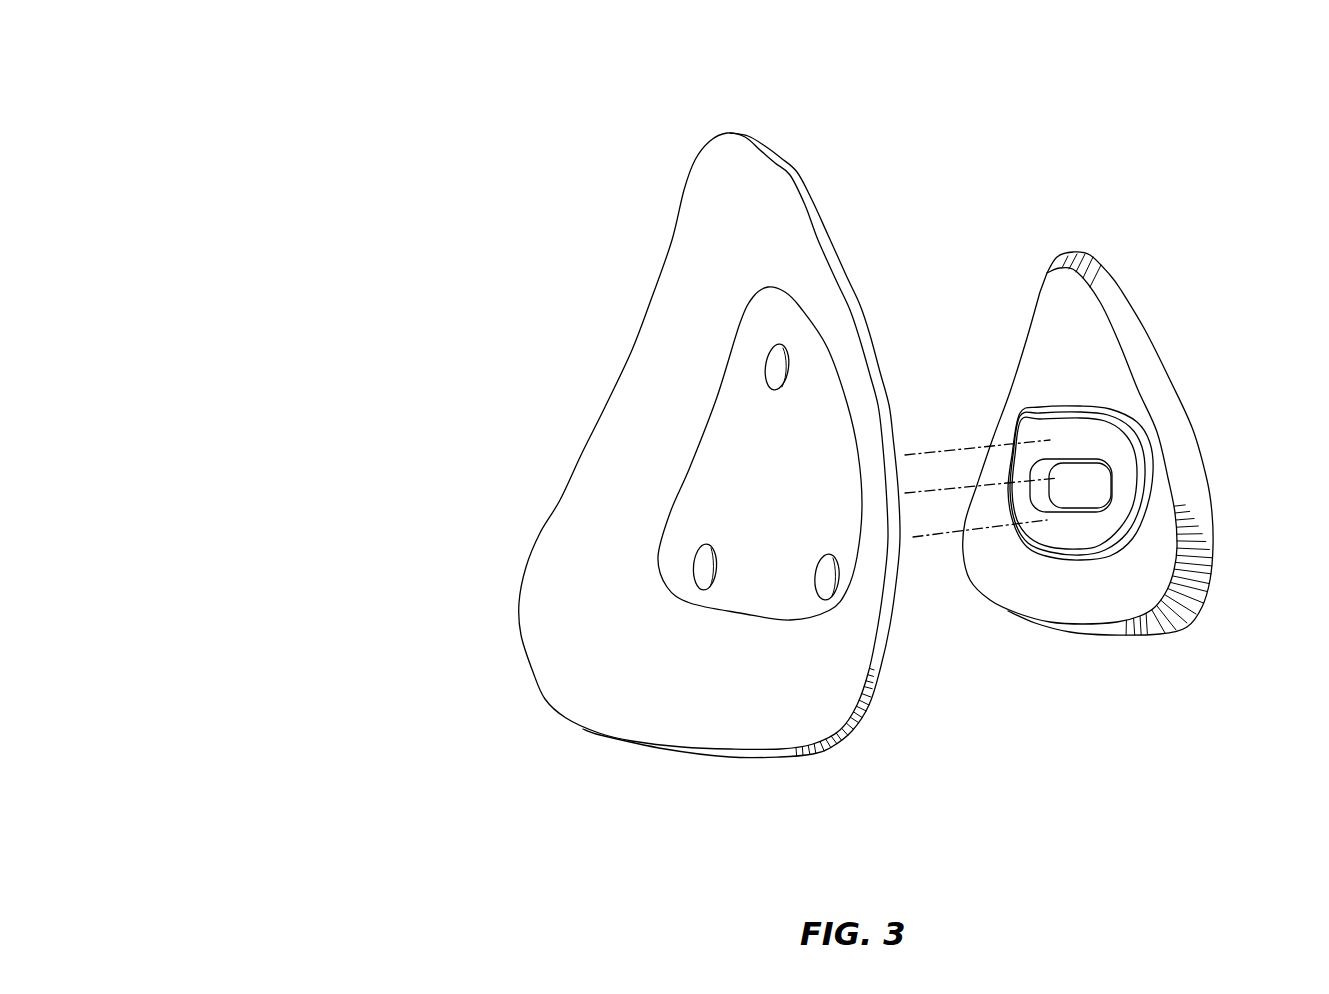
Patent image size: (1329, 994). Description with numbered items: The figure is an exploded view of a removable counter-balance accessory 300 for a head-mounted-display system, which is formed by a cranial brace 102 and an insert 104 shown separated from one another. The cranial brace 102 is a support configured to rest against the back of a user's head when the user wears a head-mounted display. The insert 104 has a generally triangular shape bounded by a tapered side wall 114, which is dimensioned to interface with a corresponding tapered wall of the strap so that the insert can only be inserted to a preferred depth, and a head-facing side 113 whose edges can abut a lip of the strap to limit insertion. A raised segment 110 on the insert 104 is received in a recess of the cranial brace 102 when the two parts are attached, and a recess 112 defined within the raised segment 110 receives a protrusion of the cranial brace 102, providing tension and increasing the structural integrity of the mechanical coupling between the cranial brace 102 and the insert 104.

The cushion assembly 300 is at (265, 97).
The cranial brace 102 is at (545, 693).
The insert 104 is at (1122, 285).
The raised segment 110 is at (1010, 432).
The recess 112 is at (1097, 493).
The head-facing side 113 is at (1158, 578).
The tapered side wall 114 is at (1158, 396).